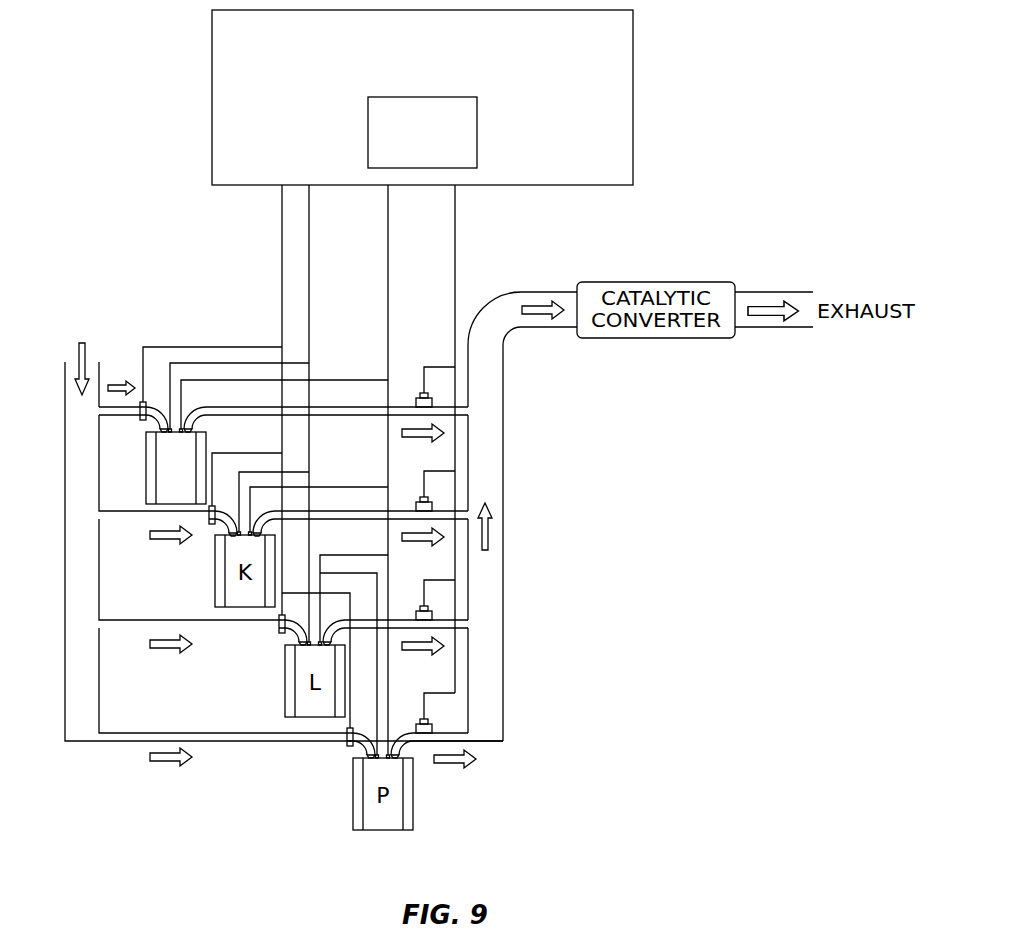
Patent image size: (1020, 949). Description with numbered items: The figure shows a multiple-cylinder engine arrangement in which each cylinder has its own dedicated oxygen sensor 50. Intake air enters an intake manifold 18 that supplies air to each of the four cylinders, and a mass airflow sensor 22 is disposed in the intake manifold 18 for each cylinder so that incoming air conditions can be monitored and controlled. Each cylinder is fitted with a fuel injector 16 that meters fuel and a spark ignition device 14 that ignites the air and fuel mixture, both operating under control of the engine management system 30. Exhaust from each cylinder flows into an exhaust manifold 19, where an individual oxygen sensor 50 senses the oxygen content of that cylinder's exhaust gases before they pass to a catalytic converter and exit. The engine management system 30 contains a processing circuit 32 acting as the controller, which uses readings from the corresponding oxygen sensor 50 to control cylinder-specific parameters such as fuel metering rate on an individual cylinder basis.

The spark ignition device 14 is at (150, 433).
The fuel injector 16 is at (162, 426).
The intake manifold 18 is at (83, 570).
The exhaust manifold 19 is at (490, 392).
The mass airflow sensor 22 is at (141, 402).
The engine management system 30 is at (409, 77).
The processing circuit 32 is at (410, 149).
The oxygen sensor 50 is at (416, 401).